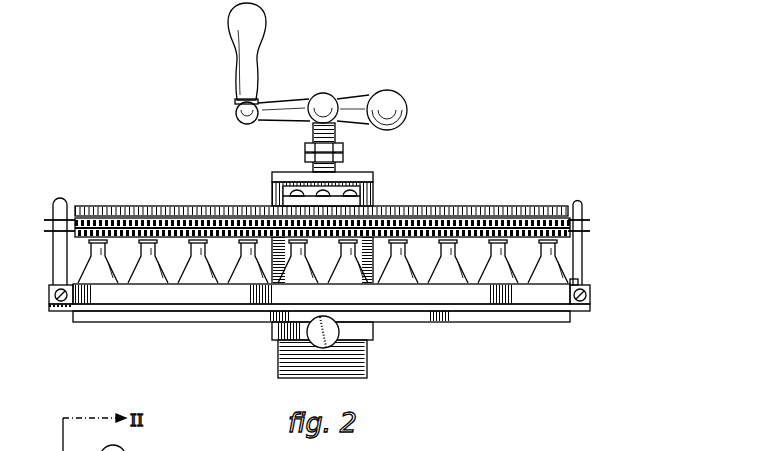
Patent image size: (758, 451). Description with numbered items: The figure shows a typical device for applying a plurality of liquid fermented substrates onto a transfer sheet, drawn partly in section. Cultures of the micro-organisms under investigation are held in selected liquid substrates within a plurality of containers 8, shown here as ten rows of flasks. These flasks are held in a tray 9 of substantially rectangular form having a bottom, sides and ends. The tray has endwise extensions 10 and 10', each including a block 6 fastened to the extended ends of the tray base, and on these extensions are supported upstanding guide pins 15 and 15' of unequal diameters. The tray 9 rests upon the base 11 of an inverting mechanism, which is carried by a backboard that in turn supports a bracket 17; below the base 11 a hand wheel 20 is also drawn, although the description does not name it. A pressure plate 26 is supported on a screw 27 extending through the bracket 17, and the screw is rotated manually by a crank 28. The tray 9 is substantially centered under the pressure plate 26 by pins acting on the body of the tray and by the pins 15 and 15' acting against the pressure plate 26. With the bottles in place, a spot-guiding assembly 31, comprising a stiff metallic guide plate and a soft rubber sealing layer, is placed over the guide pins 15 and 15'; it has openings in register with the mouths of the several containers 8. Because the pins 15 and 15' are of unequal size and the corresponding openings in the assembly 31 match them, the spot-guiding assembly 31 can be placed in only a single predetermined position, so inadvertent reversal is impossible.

The block 6 is at (48, 220).
The containers 8 is at (548, 262).
The tray 9 is at (573, 281).
The endwise extension 10 is at (616, 288).
The endwise extension 10' is at (41, 327).
The base 11 is at (432, 318).
The guide pin 15 is at (612, 226).
The guide pin 15' is at (33, 241).
The bracket 17 is at (372, 178).
The hand wheel 20 is at (311, 333).
The pressure plate 26 is at (420, 207).
The screw 27 is at (312, 138).
The crank 28 is at (405, 100).
The spot-guiding assembly 31 is at (416, 233).